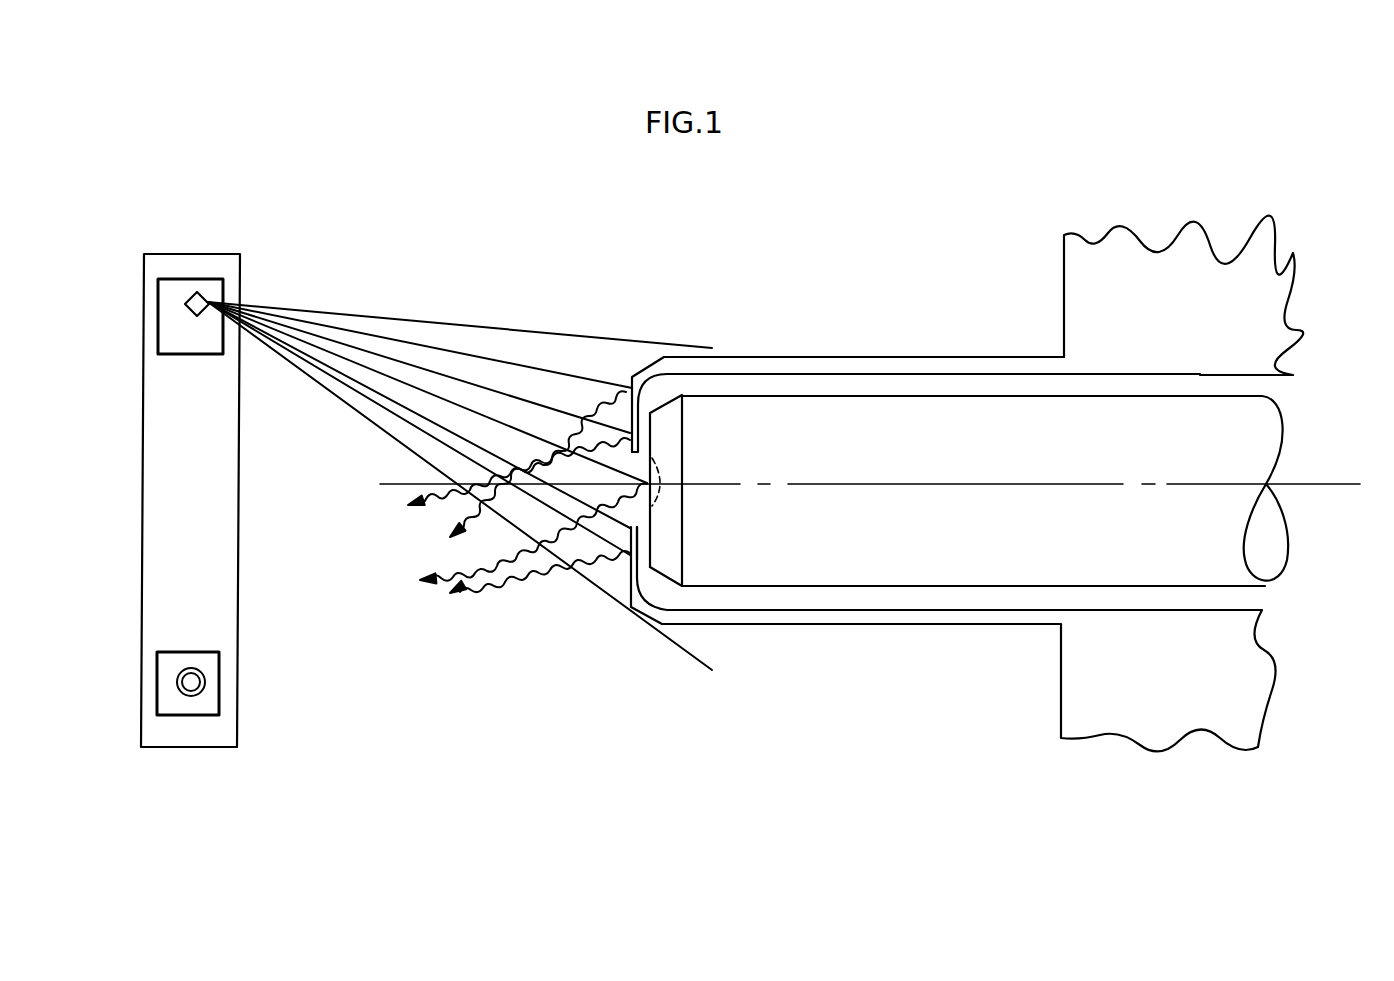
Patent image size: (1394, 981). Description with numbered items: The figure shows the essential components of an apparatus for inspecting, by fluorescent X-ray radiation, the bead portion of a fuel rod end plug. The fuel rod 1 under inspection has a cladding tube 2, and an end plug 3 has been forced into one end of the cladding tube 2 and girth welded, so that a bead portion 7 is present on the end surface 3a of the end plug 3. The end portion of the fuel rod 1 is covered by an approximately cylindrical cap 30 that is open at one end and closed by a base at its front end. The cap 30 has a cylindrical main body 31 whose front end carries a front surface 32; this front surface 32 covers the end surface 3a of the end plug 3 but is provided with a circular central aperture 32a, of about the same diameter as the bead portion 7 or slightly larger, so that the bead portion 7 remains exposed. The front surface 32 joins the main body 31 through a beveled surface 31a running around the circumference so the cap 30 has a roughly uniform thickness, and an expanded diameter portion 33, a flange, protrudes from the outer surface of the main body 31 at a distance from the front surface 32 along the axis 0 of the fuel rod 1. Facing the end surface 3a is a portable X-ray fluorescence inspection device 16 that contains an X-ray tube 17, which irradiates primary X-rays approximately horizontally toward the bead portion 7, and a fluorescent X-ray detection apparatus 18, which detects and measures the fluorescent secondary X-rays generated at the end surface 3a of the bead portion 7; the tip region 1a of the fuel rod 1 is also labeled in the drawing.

The axis 0 is at (1323, 484).
The fuel rod 1 is at (735, 382).
The nozzle end face 1a is at (745, 595).
The cladding tube 2 is at (865, 395).
The end plug 3 is at (668, 566).
The end surface 3a is at (636, 535).
The bead portion 7 is at (676, 463).
The X-ray fluorescence inspection device 16 is at (144, 497).
The X-ray tube 17 is at (158, 308).
The fluorescent X-ray detection apparatus 18 is at (157, 695).
The cap 30 is at (797, 656).
The main body 31 is at (940, 625).
The beveled surface 31a is at (650, 366).
The front surface 32 is at (622, 398).
The central aperture 32a is at (562, 562).
The expanded diameter portion 33 is at (1065, 273).